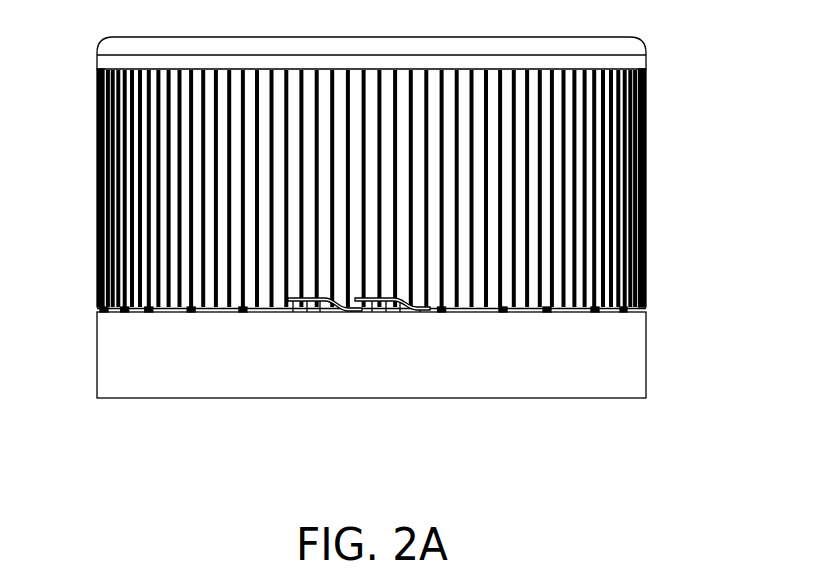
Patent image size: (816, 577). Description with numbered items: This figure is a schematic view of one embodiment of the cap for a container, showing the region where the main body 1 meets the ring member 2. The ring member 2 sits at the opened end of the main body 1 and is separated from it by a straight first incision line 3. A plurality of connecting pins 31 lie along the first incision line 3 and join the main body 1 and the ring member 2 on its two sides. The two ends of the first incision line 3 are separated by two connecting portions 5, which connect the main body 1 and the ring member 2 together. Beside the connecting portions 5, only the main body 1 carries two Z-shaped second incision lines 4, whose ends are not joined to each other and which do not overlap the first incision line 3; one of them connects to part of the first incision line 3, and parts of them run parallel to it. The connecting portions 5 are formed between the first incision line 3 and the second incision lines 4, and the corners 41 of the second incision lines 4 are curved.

The main body 1 is at (646, 175).
The ring member 2 is at (646, 357).
The first incision line 3 is at (646, 309).
The connecting pins 31 is at (503, 312).
The second incision lines 4 is at (293, 303).
The corners 41 is at (332, 303).
The connecting portions 5 is at (310, 303).